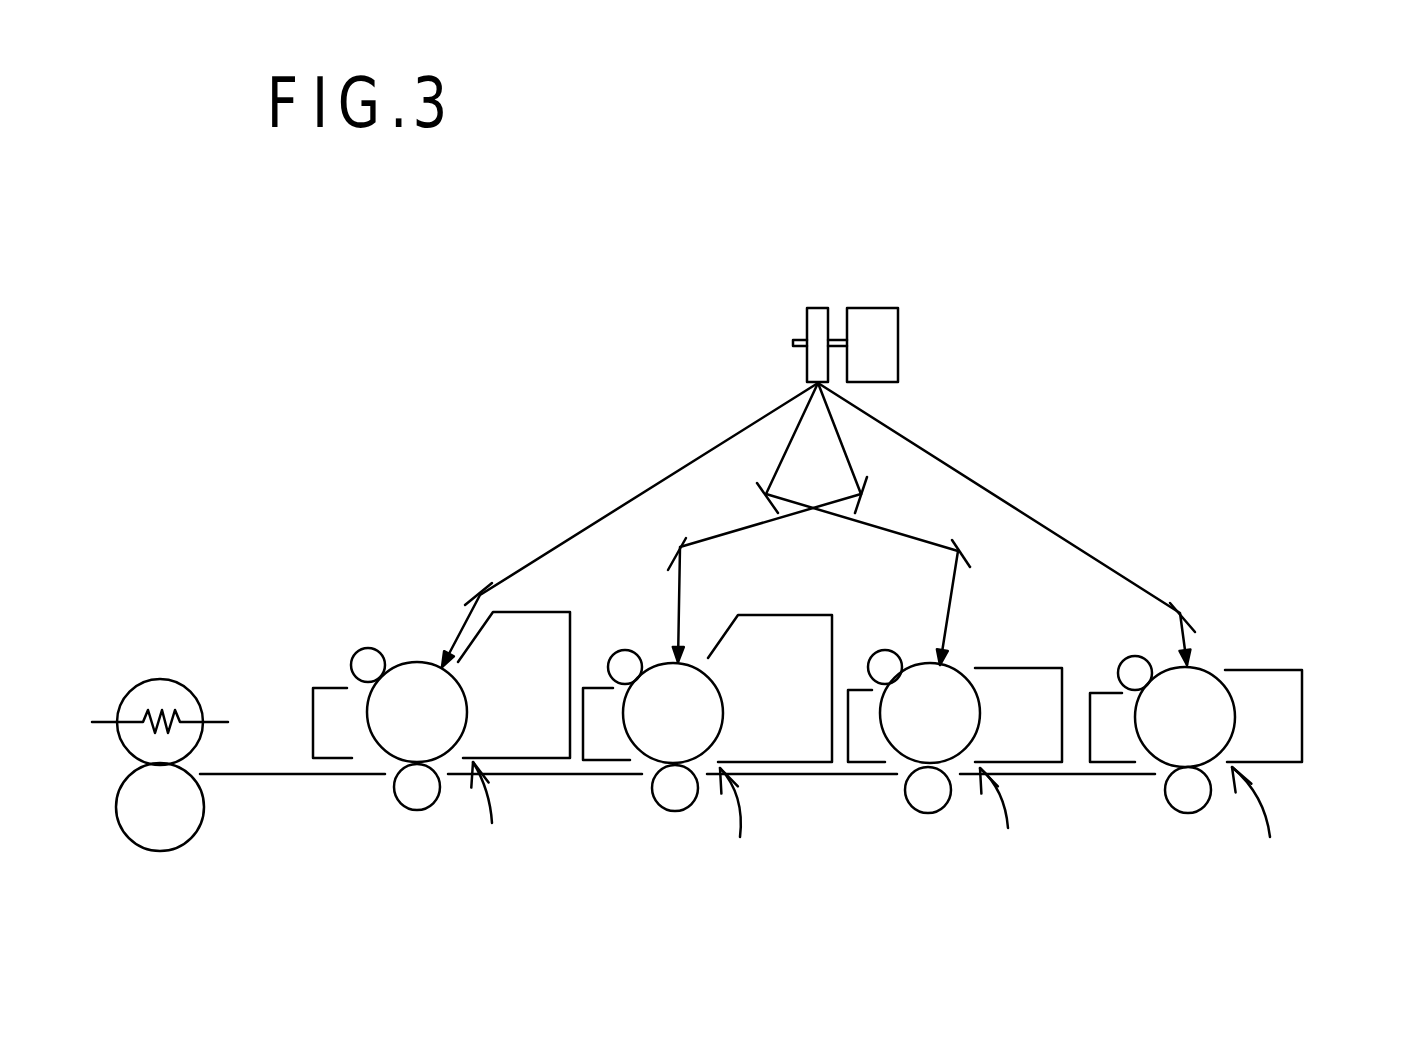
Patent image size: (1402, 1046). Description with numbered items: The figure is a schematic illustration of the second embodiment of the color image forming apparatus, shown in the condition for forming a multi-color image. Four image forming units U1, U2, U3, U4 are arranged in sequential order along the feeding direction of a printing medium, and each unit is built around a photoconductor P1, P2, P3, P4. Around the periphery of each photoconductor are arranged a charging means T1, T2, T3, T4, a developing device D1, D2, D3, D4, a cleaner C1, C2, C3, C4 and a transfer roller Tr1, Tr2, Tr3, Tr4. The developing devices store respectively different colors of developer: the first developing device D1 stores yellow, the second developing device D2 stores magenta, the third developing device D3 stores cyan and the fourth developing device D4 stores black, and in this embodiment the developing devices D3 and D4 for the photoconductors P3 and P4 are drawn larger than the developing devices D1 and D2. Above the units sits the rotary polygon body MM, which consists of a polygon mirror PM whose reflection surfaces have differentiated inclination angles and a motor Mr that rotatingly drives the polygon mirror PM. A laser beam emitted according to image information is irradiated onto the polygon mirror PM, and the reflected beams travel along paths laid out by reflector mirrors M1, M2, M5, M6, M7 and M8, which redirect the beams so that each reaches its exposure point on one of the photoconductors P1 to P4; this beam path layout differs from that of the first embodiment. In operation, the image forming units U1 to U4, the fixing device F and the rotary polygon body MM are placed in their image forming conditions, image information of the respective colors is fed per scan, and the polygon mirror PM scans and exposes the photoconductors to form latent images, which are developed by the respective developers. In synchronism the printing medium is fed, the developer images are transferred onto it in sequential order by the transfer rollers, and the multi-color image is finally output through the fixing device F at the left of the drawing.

The fixing device F is at (166, 680).
The rotary polygon body MM is at (865, 258).
The polygon mirror PM is at (819, 308).
The motor Mr is at (891, 289).
The reflector mirror M1 is at (872, 481).
The reflector mirror M2 is at (713, 412).
The reflector mirror M5 is at (455, 540).
The reflector mirror M6 is at (612, 468).
The reflector mirror M7 is at (1187, 602).
The reflector mirror M8 is at (958, 548).
The photoconductor P1 is at (1228, 685).
The photoconductor P2 is at (958, 668).
The photoconductor P3 is at (693, 660).
The photoconductor P4 is at (412, 662).
The charging means T1 is at (1138, 656).
The charging means T2 is at (887, 650).
The charging means T3 is at (605, 593).
The charging means T4 is at (365, 648).
The developing device D1 is at (1280, 670).
The developing device D2 is at (1042, 667).
The developing device D3 is at (808, 614).
The developing device D4 is at (530, 612).
The cleaner C1 is at (1112, 763).
The cleaner C2 is at (868, 763).
The cleaner C3 is at (602, 762).
The cleaner C4 is at (337, 762).
The transfer roller Tr1 is at (1190, 813).
The transfer roller Tr2 is at (933, 813).
The transfer roller Tr3 is at (677, 811).
The transfer roller Tr4 is at (417, 810).
The image forming unit U1 is at (1273, 825).
The image forming unit U2 is at (1012, 825).
The image forming unit U3 is at (753, 830).
The image forming unit U4 is at (493, 820).